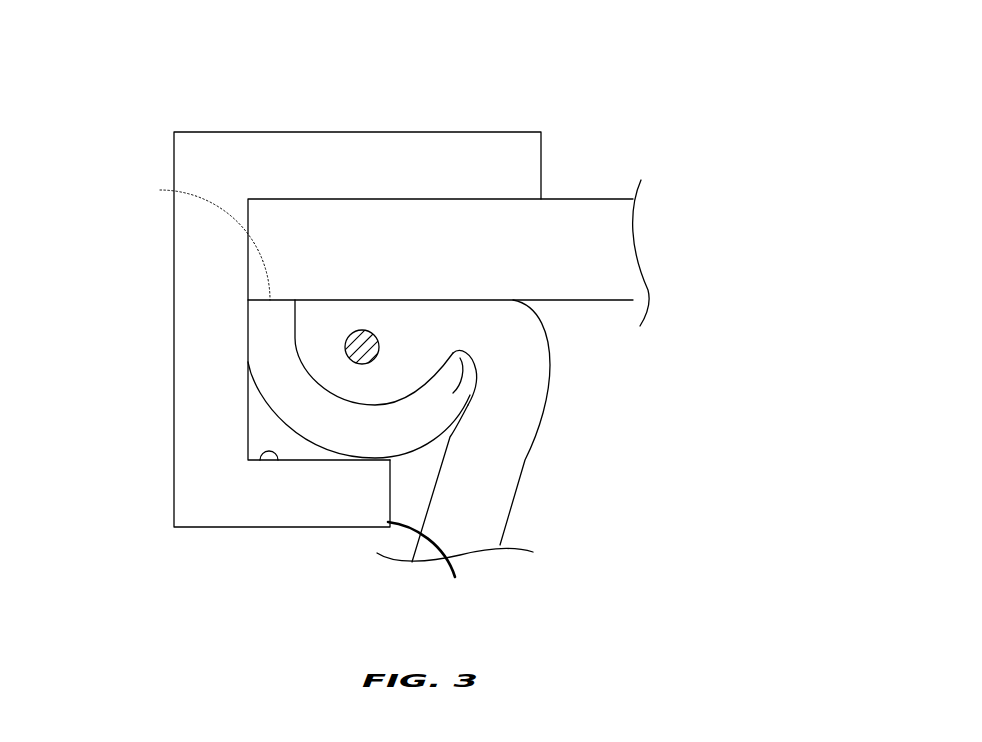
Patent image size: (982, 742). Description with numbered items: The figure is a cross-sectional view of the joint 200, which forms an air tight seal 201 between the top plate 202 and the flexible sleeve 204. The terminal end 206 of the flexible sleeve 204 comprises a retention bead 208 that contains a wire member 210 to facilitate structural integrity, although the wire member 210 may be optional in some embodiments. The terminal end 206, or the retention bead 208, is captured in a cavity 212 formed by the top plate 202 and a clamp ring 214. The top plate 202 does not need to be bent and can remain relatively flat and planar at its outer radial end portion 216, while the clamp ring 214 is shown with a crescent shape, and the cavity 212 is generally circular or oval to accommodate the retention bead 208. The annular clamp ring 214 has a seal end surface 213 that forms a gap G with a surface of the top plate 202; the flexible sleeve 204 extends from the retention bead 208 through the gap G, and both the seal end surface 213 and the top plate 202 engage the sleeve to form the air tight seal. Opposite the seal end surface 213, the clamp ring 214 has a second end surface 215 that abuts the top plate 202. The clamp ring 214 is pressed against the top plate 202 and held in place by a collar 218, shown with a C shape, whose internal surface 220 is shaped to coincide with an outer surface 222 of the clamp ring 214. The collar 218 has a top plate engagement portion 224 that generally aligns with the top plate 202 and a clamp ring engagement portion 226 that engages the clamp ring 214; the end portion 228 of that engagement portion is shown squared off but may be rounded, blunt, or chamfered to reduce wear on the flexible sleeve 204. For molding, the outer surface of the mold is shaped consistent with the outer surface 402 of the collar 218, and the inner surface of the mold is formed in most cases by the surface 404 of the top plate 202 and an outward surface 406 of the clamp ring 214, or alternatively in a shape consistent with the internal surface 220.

The joint 200 is at (737, 177).
The air tight seal 201 is at (562, 425).
The top plate 202 is at (600, 213).
The flexible sleeve 204 is at (485, 522).
The terminal end 206 is at (495, 310).
The retention bead 208 is at (319, 380).
The wire member 210 is at (377, 336).
The cavity 212 is at (450, 320).
The seal end surface 213 is at (453, 393).
The clamp ring 214 is at (270, 355).
The second end surface 215 is at (191, 241).
The outer radial end portion 216 is at (440, 249).
The collar 218 is at (390, 157).
The internal surface 220 is at (257, 460).
The outer surface 222 is at (318, 447).
The top plate engagement portion 224 is at (330, 148).
The clamp ring engagement portion 226 is at (378, 507).
The end portion 228 is at (430, 562).
The outer surface 402 is at (248, 132).
The surface 404 is at (422, 200).
The outward surface 406 is at (263, 403).
The gap G is at (572, 378).